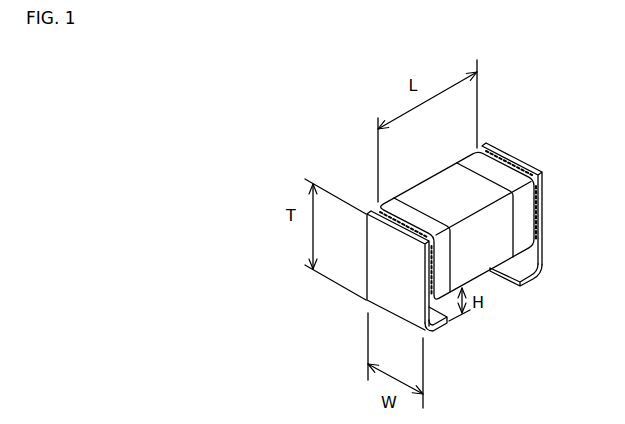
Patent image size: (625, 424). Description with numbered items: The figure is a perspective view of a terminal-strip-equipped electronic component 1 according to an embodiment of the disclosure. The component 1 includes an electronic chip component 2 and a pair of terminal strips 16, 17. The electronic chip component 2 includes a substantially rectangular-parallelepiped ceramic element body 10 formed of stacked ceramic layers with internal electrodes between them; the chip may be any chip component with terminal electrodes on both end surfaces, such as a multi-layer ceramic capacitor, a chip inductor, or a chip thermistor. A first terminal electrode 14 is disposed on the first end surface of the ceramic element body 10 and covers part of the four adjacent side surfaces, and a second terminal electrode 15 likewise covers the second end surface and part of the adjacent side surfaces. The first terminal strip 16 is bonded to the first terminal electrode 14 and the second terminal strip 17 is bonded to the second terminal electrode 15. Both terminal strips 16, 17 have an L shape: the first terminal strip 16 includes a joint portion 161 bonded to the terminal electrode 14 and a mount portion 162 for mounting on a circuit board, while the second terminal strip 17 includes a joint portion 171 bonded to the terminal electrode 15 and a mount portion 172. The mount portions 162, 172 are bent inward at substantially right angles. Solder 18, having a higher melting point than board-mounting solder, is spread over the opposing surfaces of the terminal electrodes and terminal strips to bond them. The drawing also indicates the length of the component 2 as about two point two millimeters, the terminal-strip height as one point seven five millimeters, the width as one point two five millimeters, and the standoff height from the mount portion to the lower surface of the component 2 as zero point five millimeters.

The terminal-strip-equipped electronic component 1 is at (574, 97).
The electronic chip component 2 is at (450, 162).
The ceramic element body 10 is at (437, 183).
The first terminal electrode 14 is at (393, 201).
The second terminal electrode 15 is at (474, 157).
The first terminal strip 16 is at (366, 299).
The joint portion 161 is at (378, 254).
The mount portion 162 is at (432, 323).
The second terminal strip 17 is at (545, 233).
The joint portion 171 is at (543, 201).
The mount portion 172 is at (523, 273).
The solder 18 is at (385, 227).